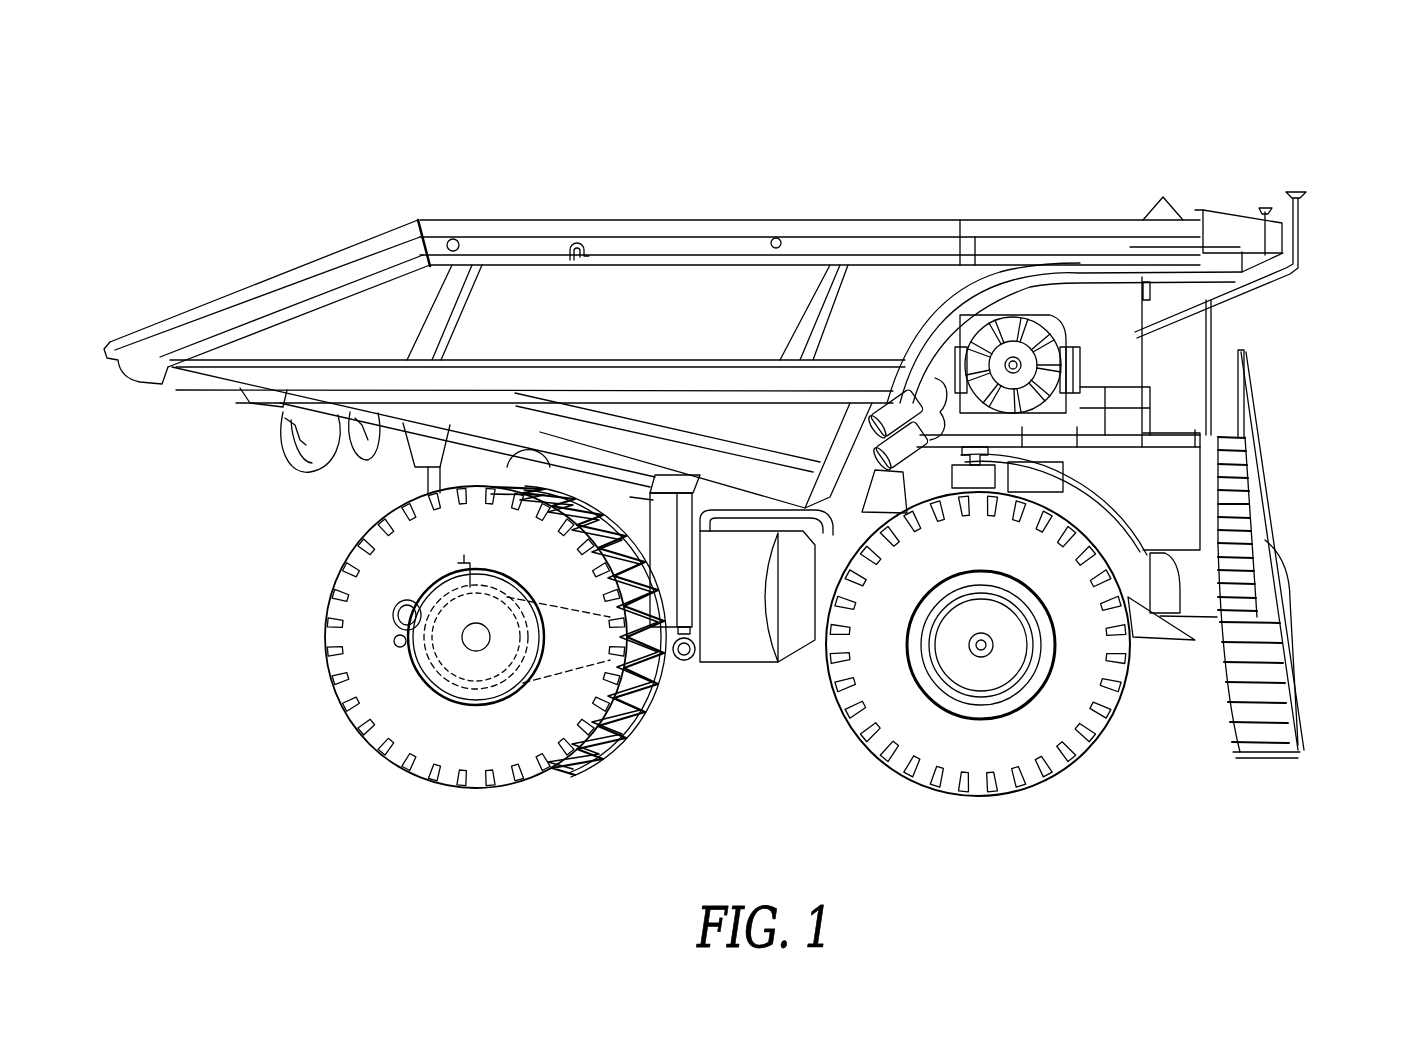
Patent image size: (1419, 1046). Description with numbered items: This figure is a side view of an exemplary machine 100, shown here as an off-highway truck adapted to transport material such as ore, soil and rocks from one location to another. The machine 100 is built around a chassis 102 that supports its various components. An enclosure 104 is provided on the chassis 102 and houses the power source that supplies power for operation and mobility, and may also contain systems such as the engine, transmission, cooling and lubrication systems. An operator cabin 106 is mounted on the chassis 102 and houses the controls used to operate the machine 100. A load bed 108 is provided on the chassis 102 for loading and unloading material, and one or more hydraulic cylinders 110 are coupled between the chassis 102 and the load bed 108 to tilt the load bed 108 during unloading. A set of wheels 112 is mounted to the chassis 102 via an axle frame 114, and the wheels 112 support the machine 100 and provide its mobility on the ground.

The machine 100 is at (1317, 111).
The chassis 102 is at (1160, 622).
The enclosure 104 is at (1078, 330).
The operator cabin 106 is at (1175, 493).
The load bed 108 is at (668, 285).
The hydraulic cylinders 110 is at (680, 597).
The wheels 112 is at (473, 753).
The axle frame 114 is at (557, 670).